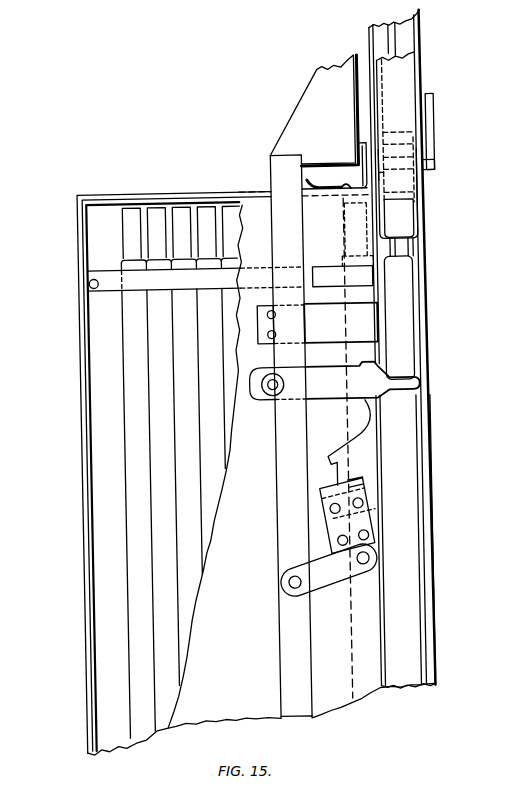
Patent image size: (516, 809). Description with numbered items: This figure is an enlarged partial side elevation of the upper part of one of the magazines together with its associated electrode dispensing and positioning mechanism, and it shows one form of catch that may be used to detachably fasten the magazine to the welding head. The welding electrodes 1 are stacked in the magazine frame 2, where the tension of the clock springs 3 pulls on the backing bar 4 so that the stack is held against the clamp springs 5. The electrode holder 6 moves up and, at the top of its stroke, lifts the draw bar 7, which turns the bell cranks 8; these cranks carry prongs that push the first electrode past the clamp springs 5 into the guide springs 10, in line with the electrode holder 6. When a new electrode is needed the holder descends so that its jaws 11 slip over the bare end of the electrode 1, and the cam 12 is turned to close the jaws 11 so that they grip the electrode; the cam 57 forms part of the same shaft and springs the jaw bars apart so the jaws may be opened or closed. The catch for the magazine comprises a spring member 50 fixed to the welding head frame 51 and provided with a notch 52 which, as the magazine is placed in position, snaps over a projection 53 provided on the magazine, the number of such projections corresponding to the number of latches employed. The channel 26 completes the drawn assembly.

The welding electrode 1 is at (187, 398).
The magazine frame 2 is at (80, 315).
The clock spring 3 is at (88, 281).
The backing bar 4 is at (95, 357).
The clamp spring 5 is at (342, 333).
The electrode holder 6 is at (428, 180).
The draw bar 7 is at (300, 112).
The bell crank 8 is at (345, 578).
The guide spring 10 is at (340, 394).
The jaw 11 is at (412, 224).
The cam 12 is at (430, 118).
The channel 26 is at (418, 31).
The spring member 50 is at (323, 187).
The welding head frame 51 is at (363, 142).
The notch 52 is at (344, 184).
The projection 53 is at (339, 191).
The cam 57 is at (395, 137).